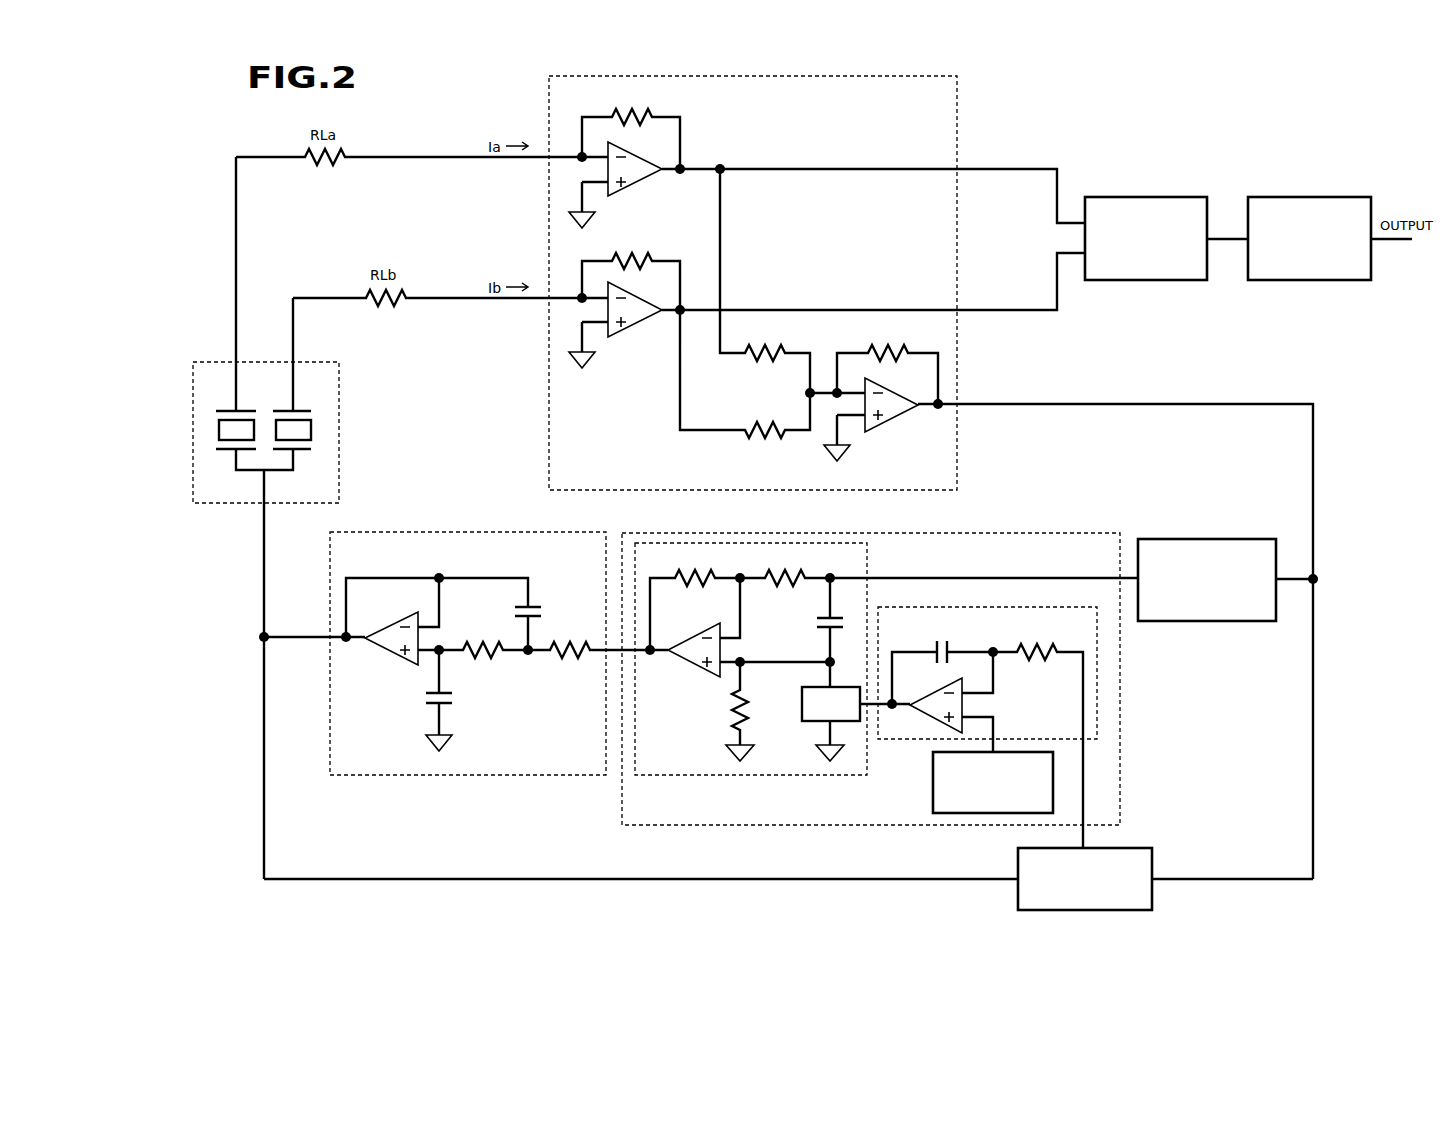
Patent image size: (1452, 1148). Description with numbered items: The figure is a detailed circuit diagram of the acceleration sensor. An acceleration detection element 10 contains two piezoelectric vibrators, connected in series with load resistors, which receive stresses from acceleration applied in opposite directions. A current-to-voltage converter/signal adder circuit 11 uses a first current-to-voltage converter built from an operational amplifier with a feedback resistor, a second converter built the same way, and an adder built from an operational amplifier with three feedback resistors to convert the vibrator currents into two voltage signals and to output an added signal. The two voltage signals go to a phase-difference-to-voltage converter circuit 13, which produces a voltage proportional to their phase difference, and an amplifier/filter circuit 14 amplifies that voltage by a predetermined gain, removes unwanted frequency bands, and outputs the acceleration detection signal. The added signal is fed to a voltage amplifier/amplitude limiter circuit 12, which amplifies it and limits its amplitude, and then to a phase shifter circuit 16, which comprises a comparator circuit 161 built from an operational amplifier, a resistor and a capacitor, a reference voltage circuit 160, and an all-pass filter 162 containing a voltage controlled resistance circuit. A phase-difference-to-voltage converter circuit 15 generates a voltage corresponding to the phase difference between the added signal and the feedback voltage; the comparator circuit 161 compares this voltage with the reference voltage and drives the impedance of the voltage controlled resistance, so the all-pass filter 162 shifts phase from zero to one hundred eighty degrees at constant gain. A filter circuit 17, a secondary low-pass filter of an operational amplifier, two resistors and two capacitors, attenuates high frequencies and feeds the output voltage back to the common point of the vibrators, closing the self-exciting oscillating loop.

The acceleration detection element 10 is at (340, 412).
The current-to-voltage converter/signal adder circuit 11 is at (957, 108).
The voltage amplifier/amplitude limiter circuit 12 is at (1205, 539).
The phase-difference-to-voltage converter circuit 13 is at (1148, 197).
The amplifier/filter circuit 14 is at (1318, 197).
The phase-difference-to-voltage converter circuit 15 is at (1153, 848).
The phase shifter circuit 16 is at (1057, 532).
The filter circuit 17 is at (447, 532).
The reference voltage circuit 160 is at (933, 795).
The comparator circuit 161 is at (1097, 690).
The all-pass filter 162 is at (870, 559).